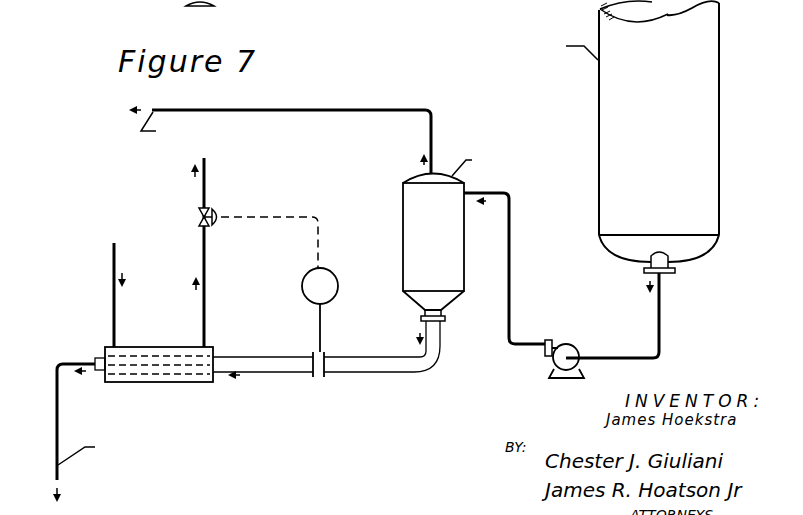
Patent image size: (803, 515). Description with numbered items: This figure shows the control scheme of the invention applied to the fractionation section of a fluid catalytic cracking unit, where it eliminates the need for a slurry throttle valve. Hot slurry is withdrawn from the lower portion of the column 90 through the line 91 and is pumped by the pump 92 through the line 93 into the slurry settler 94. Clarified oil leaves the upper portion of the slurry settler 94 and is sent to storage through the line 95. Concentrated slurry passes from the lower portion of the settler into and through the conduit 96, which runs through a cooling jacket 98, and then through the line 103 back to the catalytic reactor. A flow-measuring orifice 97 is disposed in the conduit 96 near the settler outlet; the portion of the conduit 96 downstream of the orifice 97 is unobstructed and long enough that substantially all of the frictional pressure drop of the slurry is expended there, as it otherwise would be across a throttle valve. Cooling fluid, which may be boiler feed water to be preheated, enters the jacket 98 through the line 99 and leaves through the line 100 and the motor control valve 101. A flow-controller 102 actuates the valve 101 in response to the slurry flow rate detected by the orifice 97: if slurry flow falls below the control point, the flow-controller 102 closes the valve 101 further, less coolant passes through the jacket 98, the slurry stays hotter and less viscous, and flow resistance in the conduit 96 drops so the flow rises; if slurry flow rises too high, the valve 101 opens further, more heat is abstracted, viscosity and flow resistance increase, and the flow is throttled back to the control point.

The column 90 is at (719, 106).
The line 91 is at (662, 318).
The pump 92 is at (553, 340).
The line 93 is at (510, 277).
The slurry settler 94 is at (403, 192).
The line 95 is at (306, 110).
The conduit 96 is at (100, 357).
The flow-measuring orifice 97 is at (322, 376).
The cooling jacket 98 is at (133, 347).
The line 99 is at (112, 268).
The line 100 is at (205, 288).
The motor control valve 101 is at (216, 211).
The flow-controller 102 is at (333, 271).
The line 103 is at (58, 421).